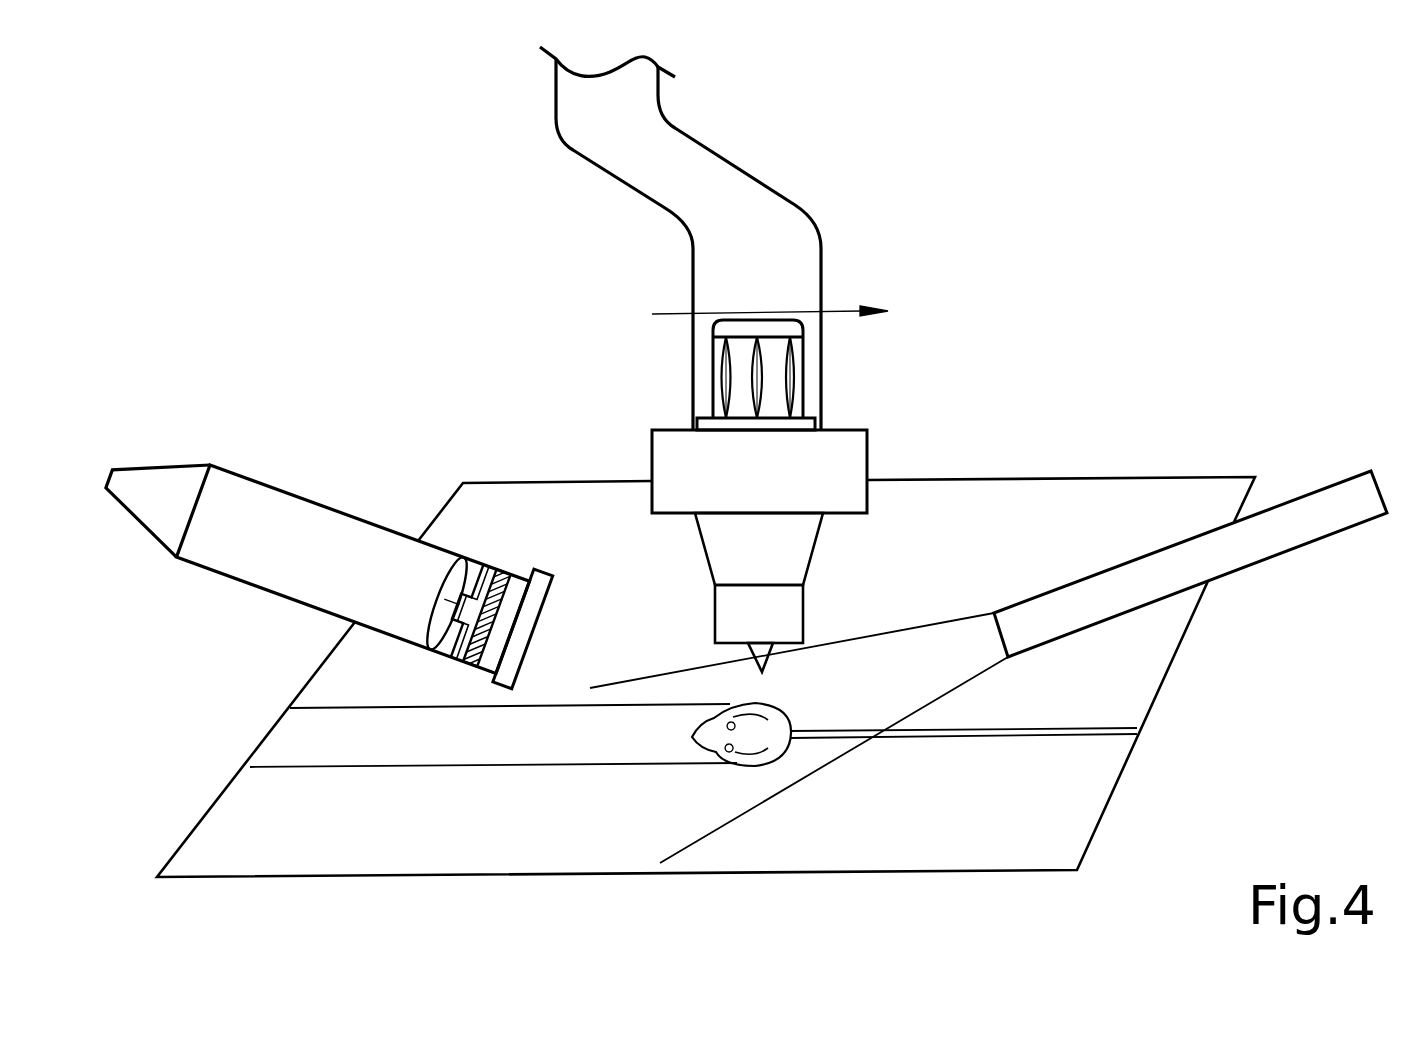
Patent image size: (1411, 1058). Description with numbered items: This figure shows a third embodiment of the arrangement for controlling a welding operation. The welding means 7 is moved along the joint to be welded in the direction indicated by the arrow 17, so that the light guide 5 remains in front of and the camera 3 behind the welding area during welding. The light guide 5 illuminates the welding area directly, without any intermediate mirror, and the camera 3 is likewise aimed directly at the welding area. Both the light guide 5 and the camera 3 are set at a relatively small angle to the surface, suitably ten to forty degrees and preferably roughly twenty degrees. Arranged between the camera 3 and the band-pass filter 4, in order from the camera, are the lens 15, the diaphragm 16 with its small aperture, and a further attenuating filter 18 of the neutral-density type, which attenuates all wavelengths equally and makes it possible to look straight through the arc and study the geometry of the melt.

The camera 3 is at (280, 503).
The band-pass filter 4 is at (543, 580).
The light guide 5 is at (1145, 568).
The welding means 7 is at (800, 293).
The lens 15 is at (450, 603).
The diaphragm 16 is at (493, 575).
The arrow 17 is at (830, 312).
The attenuating filter 18 is at (515, 577).